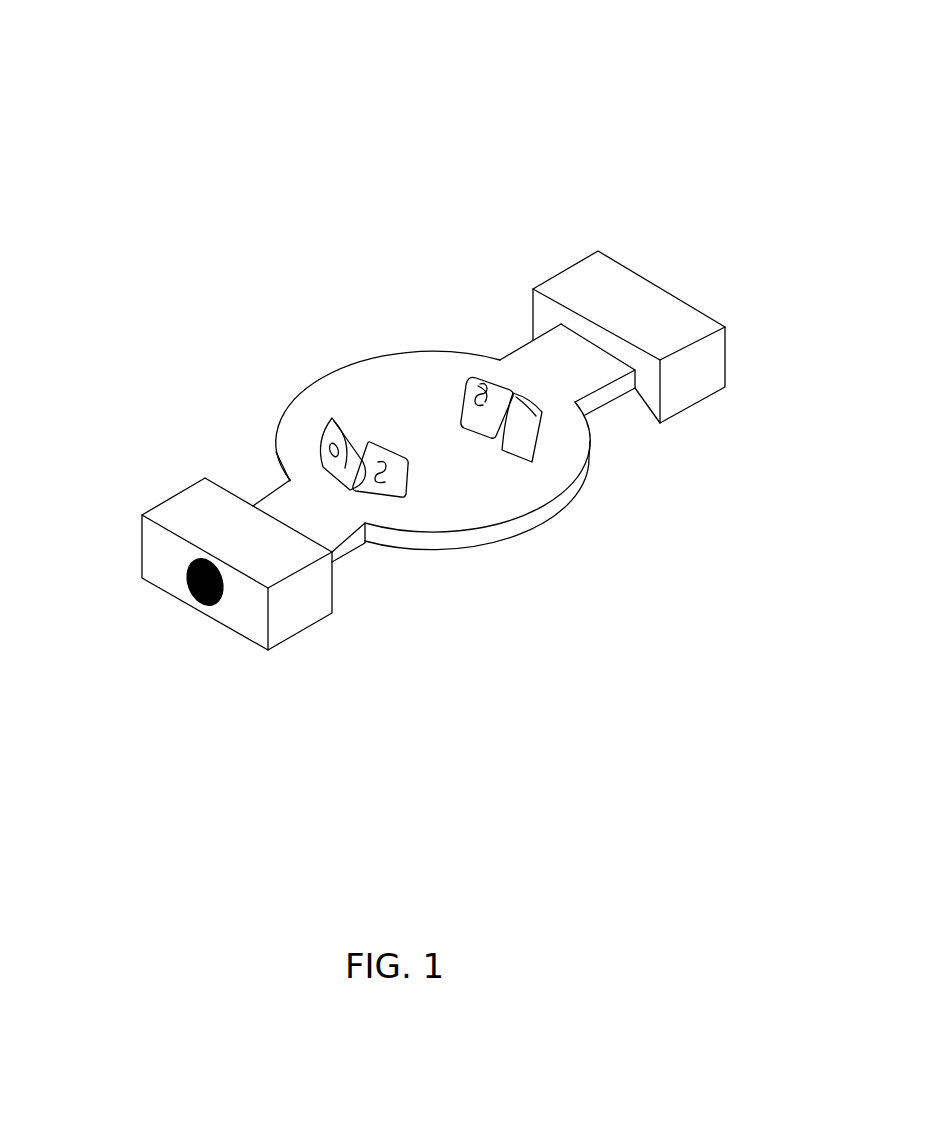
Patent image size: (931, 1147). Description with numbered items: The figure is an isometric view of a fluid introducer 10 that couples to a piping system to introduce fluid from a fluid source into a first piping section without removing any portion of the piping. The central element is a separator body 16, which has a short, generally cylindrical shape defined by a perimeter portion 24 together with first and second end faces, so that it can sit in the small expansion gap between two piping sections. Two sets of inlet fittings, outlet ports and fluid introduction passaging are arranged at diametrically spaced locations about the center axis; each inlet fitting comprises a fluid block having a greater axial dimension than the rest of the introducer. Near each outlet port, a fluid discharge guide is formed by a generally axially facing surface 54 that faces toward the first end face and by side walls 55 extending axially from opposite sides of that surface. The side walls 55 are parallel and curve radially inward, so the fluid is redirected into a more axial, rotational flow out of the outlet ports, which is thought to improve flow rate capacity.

The fluid introducer 10 is at (733, 98).
The separator body 16 is at (392, 403).
The perimeter portion 24 is at (513, 520).
The generally axially facing surface 54 is at (357, 443).
The side walls 55 is at (330, 417).